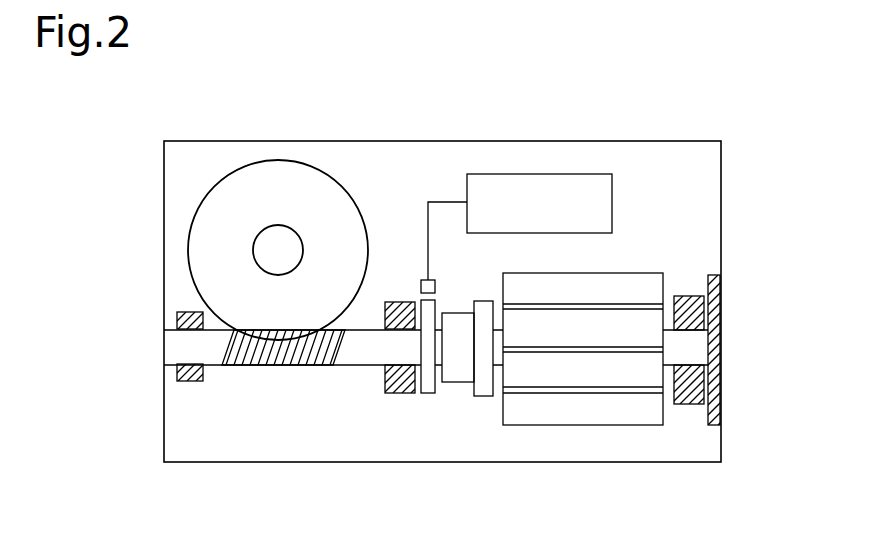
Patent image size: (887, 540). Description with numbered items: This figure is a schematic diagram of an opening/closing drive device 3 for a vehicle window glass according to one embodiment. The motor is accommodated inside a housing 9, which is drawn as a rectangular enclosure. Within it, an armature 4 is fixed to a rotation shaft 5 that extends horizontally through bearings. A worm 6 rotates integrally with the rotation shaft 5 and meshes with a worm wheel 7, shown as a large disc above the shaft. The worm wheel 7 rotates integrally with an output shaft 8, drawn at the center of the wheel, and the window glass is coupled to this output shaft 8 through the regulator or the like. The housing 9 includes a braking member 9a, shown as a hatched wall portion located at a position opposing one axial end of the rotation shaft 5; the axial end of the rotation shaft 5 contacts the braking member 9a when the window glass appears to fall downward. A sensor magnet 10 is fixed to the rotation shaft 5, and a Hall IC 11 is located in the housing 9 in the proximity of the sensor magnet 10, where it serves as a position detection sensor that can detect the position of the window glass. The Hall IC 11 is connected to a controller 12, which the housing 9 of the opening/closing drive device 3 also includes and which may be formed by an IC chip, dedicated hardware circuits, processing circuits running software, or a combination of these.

The opening/closing drive device 3 is at (468, 119).
The armature 4 is at (640, 273).
The rotation shaft 5 is at (686, 345).
The worm 6 is at (273, 367).
The worm wheel 7 is at (356, 192).
The output shaft 8 is at (278, 225).
The housing 9 is at (591, 141).
The braking member 9a is at (720, 349).
The sensor magnet 10 is at (430, 394).
The Hall IC 11 is at (436, 287).
The controller 12 is at (612, 190).